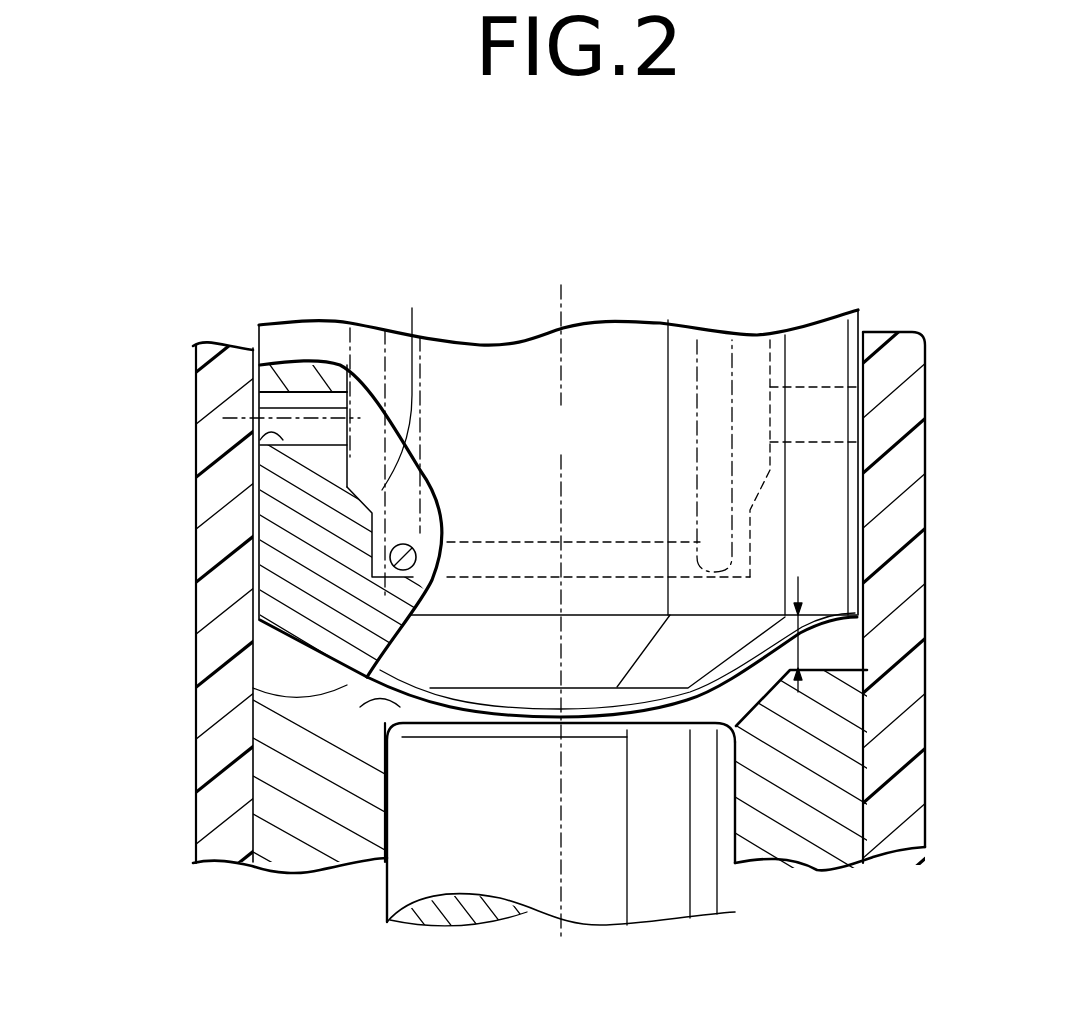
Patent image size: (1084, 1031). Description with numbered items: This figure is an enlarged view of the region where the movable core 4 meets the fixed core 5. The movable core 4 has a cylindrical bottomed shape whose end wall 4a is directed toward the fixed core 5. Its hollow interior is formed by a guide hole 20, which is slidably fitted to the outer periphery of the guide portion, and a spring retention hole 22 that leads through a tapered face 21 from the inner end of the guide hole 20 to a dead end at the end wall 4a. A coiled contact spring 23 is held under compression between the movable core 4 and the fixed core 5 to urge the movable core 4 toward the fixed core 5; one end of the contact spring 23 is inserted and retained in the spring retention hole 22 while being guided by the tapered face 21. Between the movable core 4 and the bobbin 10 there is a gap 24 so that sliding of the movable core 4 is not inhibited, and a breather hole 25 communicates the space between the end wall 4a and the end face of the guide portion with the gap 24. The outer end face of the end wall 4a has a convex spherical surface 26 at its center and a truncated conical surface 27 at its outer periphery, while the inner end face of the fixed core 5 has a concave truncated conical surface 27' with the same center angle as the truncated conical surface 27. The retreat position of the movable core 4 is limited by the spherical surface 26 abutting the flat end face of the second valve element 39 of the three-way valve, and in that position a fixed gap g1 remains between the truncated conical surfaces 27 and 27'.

The movable core 4 is at (577, 452).
The end wall 4a is at (398, 626).
The fixed core 5 is at (805, 843).
The bobbin 10 is at (205, 734).
The guide hole 20 is at (352, 348).
The tapered face 21 is at (414, 375).
The spring retention hole 22 is at (385, 535).
The contact spring 23 is at (418, 545).
The gap 24 is at (262, 390).
The breather hole 25 is at (257, 424).
The convex spherical surface 26 is at (523, 703).
The truncated conical surface 27 is at (263, 796).
The concave truncated conical surface 27' is at (414, 758).
The second valve element 39 is at (590, 866).
The fixed gap g1 is at (740, 648).